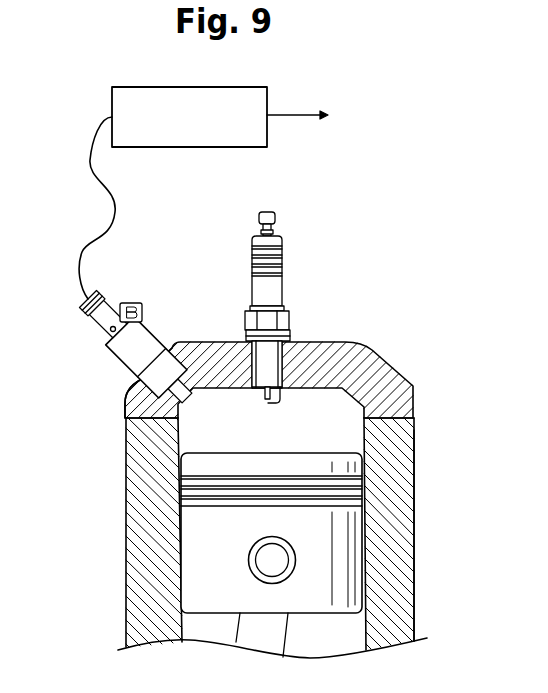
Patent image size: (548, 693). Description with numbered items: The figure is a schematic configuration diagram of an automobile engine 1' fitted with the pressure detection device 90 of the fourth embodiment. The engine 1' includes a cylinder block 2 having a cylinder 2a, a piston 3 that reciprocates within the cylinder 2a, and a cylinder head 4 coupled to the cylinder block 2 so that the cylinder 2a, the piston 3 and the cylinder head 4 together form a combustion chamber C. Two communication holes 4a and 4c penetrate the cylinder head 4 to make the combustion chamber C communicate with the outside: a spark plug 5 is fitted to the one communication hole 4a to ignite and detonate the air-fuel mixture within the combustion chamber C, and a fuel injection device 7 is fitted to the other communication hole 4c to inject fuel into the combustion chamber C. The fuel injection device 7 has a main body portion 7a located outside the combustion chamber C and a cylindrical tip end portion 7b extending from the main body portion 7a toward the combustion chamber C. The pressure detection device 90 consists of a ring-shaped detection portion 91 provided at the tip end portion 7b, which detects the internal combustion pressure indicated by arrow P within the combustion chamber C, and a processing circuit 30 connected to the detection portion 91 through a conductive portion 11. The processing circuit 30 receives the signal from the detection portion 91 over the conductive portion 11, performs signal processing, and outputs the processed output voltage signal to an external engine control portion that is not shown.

The automobile engine 1' is at (253, 387).
The cylinder block 2 is at (426, 375).
The cylinder 2a is at (417, 497).
The piston 3 is at (178, 573).
The cylinder head 4 is at (394, 360).
The communication hole 4a is at (282, 364).
The communication hole 4c is at (126, 403).
The spark plug 5 is at (284, 287).
The fuel injection device 7 is at (110, 360).
The main body portion 7a is at (110, 372).
The tip end portion 7b is at (185, 377).
The conductive portion 11 is at (89, 245).
The processing circuit 30 is at (143, 147).
The pressure detection device 90 is at (216, 164).
The detection portion 91 is at (203, 345).
The combustion pressure P is at (188, 401).
The combustion chamber C is at (313, 432).